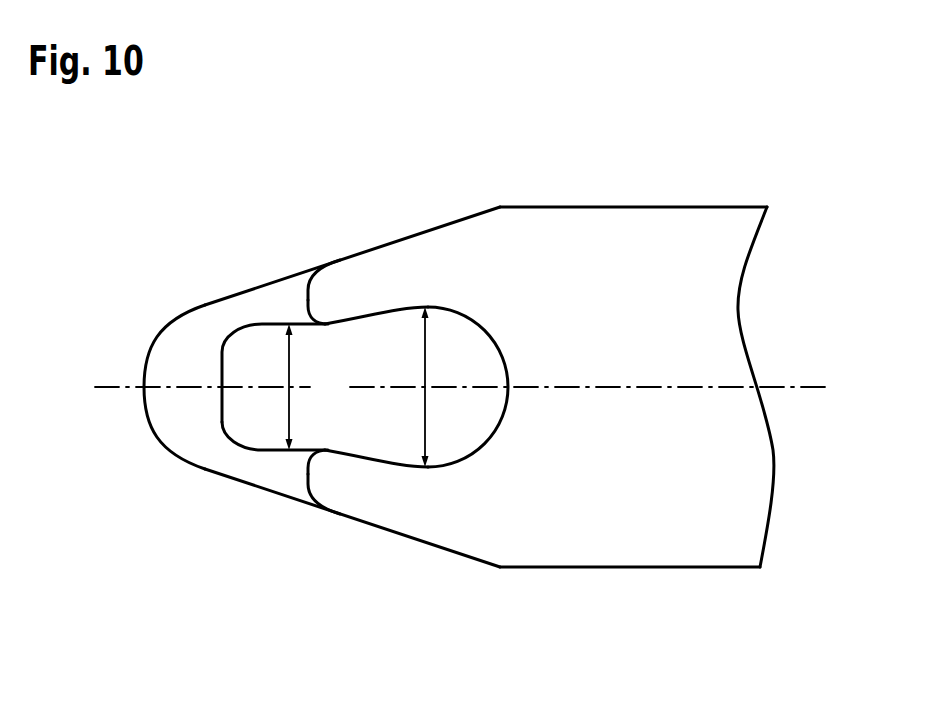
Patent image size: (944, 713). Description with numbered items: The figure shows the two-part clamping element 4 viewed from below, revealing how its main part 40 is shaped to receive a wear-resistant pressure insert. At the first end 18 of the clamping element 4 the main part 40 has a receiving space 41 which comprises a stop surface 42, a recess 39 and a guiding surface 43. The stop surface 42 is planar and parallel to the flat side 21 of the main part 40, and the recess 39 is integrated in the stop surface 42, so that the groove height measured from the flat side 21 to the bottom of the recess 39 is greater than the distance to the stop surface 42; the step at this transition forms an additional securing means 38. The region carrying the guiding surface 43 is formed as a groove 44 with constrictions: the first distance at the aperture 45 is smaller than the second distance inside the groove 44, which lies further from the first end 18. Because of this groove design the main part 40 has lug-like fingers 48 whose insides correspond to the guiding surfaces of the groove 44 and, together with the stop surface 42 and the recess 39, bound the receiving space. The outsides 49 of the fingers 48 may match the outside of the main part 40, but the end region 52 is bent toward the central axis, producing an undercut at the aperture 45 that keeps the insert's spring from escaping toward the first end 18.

The clamping element 4 is at (658, 160).
The first end 18 is at (160, 270).
The flat side 21 is at (667, 497).
The securing means 38 is at (218, 377).
The recess 39 is at (410, 424).
The main part 40 is at (480, 614).
The receiving space 41 is at (165, 358).
The stop surface 42 is at (205, 428).
The guiding surface 43 is at (368, 332).
The groove 44 is at (461, 305).
The aperture 45 is at (250, 423).
The fingers 48 is at (420, 287).
The outsides of the fingers 49 is at (408, 237).
The end region of the fingers 52 is at (290, 293).